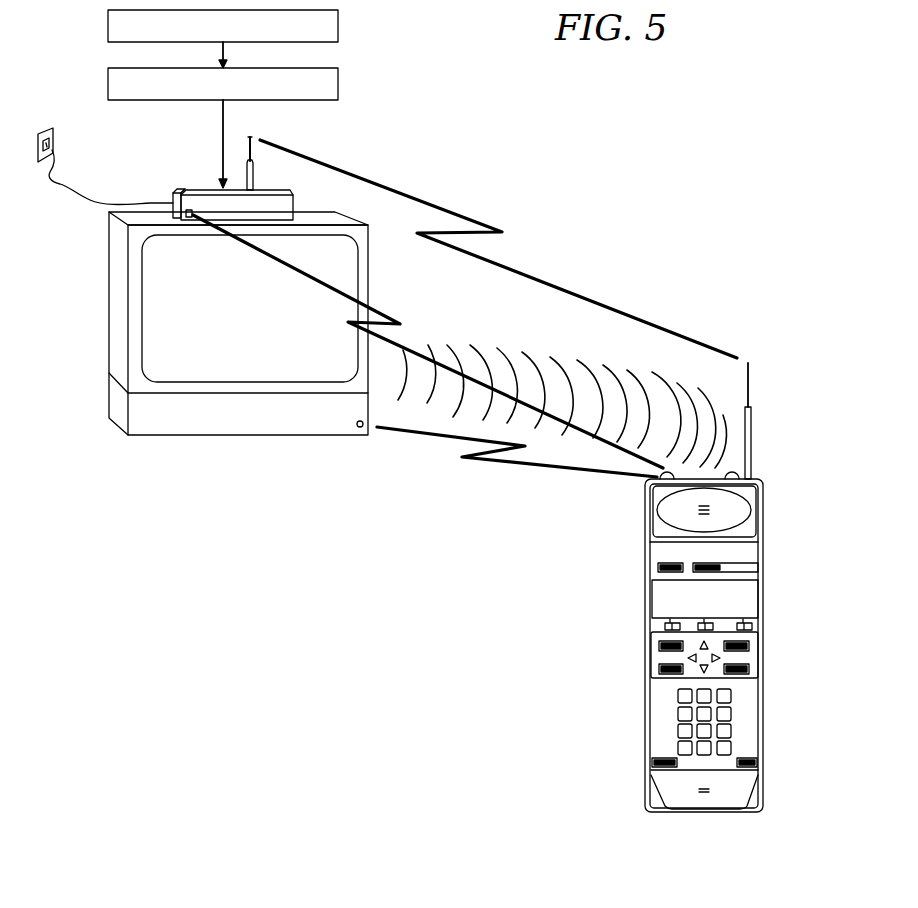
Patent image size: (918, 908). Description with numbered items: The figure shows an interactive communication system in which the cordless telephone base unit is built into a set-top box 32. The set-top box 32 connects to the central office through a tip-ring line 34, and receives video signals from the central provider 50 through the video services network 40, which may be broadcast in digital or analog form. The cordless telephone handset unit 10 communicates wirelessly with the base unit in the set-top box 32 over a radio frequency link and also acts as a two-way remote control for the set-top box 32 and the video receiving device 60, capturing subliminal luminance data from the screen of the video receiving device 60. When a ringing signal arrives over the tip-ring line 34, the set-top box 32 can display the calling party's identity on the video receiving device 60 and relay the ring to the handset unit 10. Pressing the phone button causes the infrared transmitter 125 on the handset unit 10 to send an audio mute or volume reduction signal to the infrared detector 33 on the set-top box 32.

The central provider 50 is at (338, 27).
The video services network 40 is at (338, 85).
The tip-ring line 34 is at (68, 176).
The infrared detector 33 is at (183, 192).
The set-top box 32 is at (292, 199).
The video receiving device 60 is at (372, 297).
The infrared transmitter 125 is at (660, 468).
The handset unit 10 is at (764, 550).